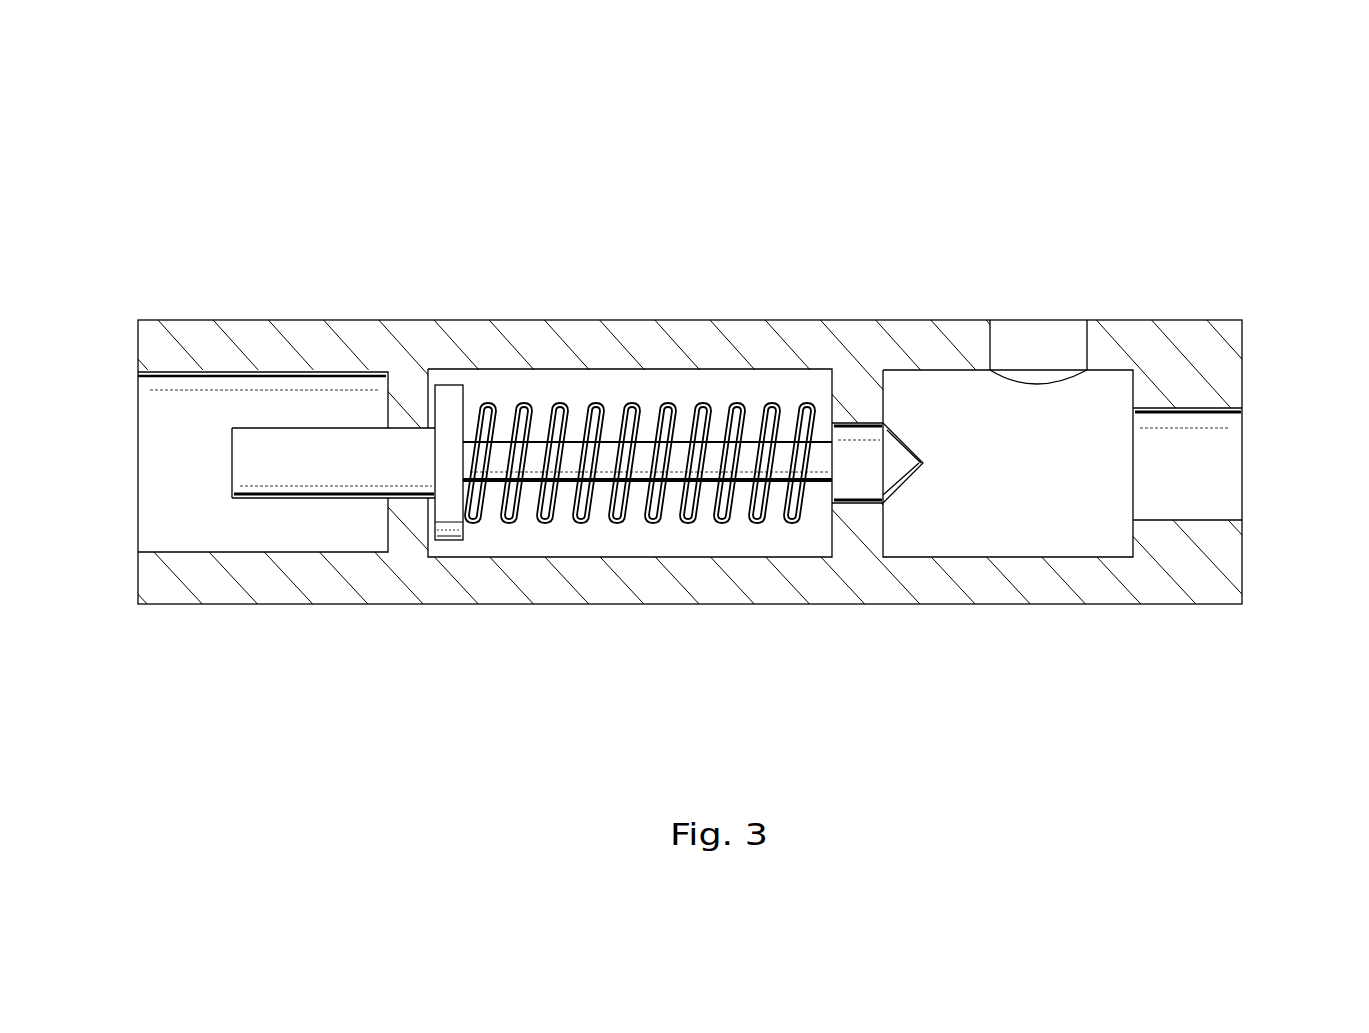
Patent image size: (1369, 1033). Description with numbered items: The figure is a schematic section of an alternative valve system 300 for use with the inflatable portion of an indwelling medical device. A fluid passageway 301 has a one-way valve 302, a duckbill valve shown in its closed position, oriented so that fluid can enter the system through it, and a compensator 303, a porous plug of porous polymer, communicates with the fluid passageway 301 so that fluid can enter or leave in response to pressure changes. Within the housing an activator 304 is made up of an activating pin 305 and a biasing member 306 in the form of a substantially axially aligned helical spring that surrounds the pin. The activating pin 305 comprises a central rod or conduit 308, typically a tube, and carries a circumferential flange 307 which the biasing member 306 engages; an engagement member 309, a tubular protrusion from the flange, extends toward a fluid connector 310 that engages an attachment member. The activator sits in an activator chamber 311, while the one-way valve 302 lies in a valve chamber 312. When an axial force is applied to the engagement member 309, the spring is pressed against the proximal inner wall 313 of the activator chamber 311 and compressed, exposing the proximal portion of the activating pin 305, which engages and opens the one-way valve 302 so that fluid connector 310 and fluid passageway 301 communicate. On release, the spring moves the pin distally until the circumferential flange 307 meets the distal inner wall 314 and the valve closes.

The valve system 300 is at (853, 178).
The fluid passageway 301 is at (1207, 476).
The one-way valve 302 is at (893, 505).
The compensator 303 is at (1052, 335).
The activator 304 is at (448, 400).
The activating pin 305 is at (518, 457).
The biasing member 306 is at (735, 415).
The circumferential flange 307 is at (452, 525).
The central rod or conduit 308 is at (703, 473).
The engagement member 309 is at (253, 467).
The fluid connector 310 is at (180, 405).
The activator chamber 311 is at (628, 392).
The valve chamber 312 is at (1062, 530).
The proximal inner wall 313 is at (835, 525).
The distal inner wall 314 is at (427, 402).